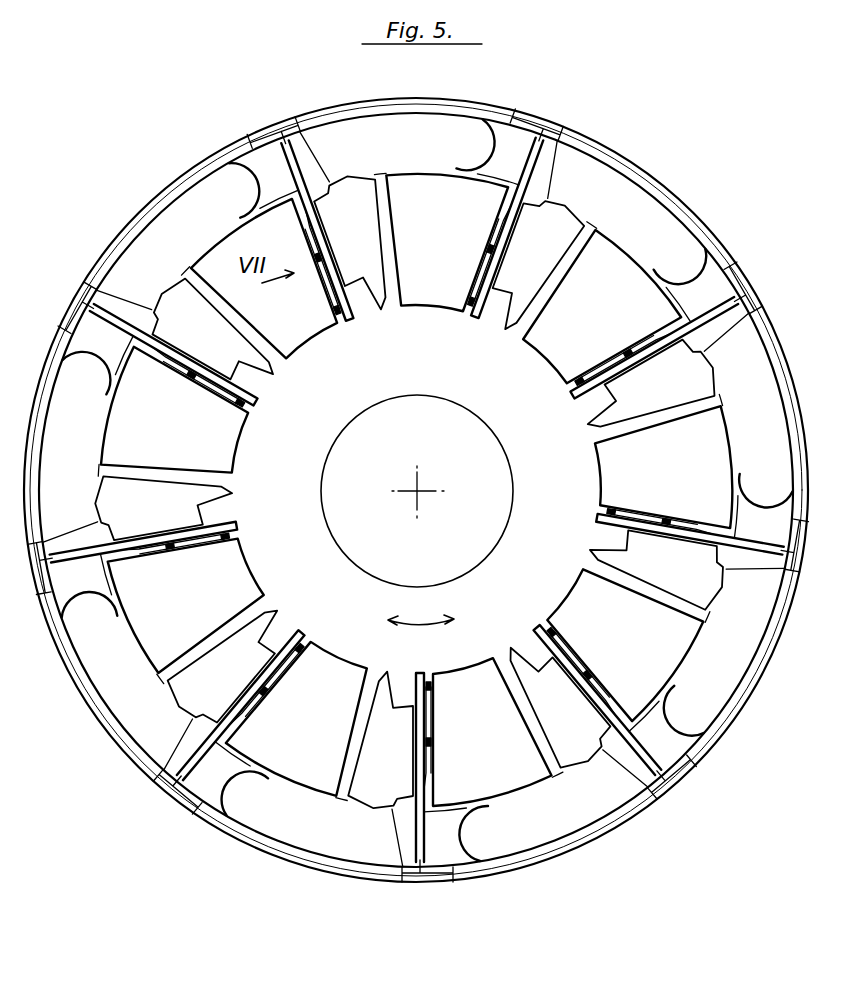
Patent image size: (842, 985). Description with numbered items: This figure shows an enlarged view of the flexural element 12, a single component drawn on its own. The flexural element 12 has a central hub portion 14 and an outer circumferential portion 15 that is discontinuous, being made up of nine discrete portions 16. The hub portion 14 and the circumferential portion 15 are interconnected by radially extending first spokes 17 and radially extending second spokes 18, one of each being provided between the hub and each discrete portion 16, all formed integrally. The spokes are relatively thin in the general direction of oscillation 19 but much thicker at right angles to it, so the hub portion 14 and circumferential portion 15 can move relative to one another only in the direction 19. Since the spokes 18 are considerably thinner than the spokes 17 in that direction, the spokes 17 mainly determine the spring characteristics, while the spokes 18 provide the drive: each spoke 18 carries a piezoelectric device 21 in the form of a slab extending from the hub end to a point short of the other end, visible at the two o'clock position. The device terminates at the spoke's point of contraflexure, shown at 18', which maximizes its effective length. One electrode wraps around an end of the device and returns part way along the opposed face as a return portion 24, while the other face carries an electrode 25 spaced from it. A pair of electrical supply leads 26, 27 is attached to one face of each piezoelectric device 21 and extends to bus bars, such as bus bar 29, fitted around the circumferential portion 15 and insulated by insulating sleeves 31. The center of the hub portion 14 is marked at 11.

The shaft bore 11 is at (422, 490).
The flexural element 12 is at (678, 174).
The hub portion 14 is at (413, 365).
The circumferential portion 15 is at (512, 144).
The discrete portion 16 is at (393, 143).
The first member or spoke 17 is at (405, 240).
The second member or spoke 18 is at (410, 488).
The point of contraflexure 18' is at (418, 468).
The direction of oscillation 19 is at (418, 625).
The piezoelectric device 21 is at (608, 364).
The electrode return portion 24 is at (582, 376).
The electrode 25 is at (640, 345).
The electrical supply lead 26 is at (205, 565).
The electrical supply lead 27 is at (172, 572).
The bus bar 29 is at (95, 298).
The insulating sleeve 31 is at (188, 178).